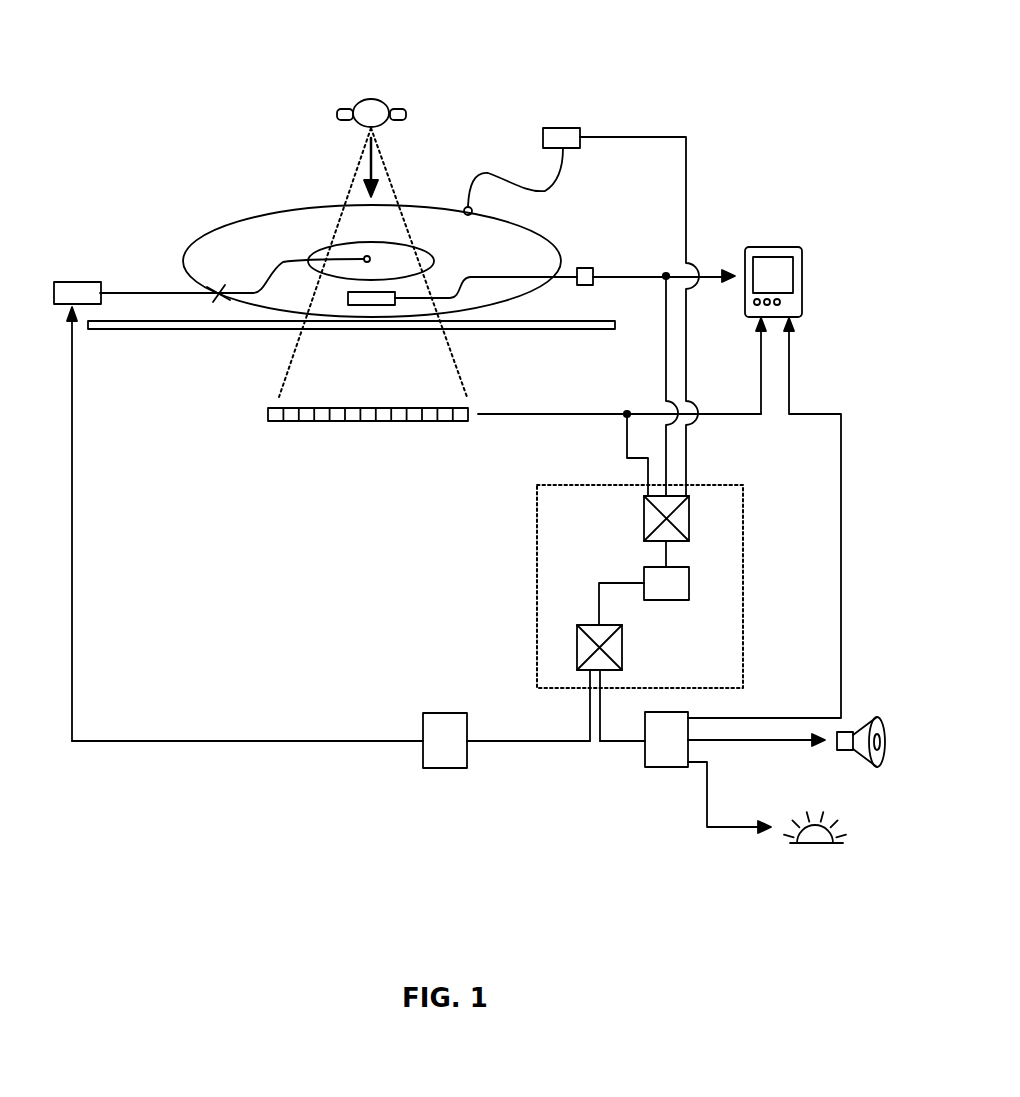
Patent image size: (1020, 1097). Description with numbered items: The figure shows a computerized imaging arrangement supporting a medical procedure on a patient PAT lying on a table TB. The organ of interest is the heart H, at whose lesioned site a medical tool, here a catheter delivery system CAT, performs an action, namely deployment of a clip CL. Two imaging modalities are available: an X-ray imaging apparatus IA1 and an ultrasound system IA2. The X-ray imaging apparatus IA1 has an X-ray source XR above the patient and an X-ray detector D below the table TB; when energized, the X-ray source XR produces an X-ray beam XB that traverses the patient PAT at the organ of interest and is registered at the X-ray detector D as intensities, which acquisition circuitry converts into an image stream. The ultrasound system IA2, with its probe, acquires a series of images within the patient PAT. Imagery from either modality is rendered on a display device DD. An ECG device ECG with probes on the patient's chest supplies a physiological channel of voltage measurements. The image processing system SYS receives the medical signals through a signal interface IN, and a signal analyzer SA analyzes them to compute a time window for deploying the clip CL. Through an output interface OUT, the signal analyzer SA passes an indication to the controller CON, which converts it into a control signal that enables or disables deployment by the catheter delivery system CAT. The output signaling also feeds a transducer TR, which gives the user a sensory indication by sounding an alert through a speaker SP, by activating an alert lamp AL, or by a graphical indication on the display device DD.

The X-ray imaging apparatus IA1 is at (385, 63).
The X-ray source XR is at (382, 88).
The X-ray beam XB is at (392, 158).
The patient PAT is at (203, 248).
The heart H is at (380, 250).
The clip CL is at (366, 258).
The catheter delivery system CAT is at (83, 268).
The ultrasound system IA2 is at (467, 277).
The ECG device ECG is at (567, 132).
The display device DD is at (777, 245).
The table TB is at (613, 327).
The X-ray detector D is at (302, 423).
The image processing system SYS is at (517, 527).
The signal interface IN is at (692, 513).
The signal analyzer SA is at (692, 580).
The output interface OUT is at (623, 650).
The controller CON is at (450, 771).
The transducer TR is at (670, 770).
The speaker SP is at (868, 715).
The alert lamp AL is at (810, 848).